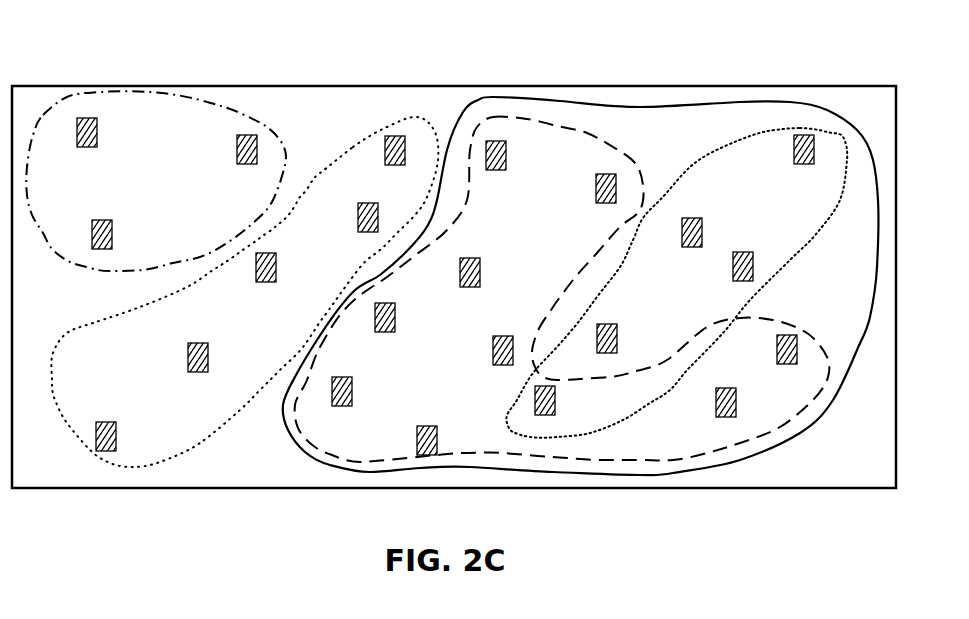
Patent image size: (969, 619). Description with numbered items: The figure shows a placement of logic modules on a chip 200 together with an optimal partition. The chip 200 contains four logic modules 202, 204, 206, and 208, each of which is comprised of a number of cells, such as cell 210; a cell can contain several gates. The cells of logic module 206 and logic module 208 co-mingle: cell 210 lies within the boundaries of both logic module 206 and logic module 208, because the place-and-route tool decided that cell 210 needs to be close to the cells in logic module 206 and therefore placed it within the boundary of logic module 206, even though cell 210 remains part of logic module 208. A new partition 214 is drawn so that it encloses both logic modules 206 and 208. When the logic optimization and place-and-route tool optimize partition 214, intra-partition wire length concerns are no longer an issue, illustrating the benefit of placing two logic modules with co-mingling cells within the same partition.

The chip 200 is at (13, 490).
The logic module 202 is at (200, 100).
The logic module 204 is at (347, 153).
The logic module 206 is at (533, 125).
The logic module 208 is at (780, 133).
The cell 210 is at (567, 400).
The partition 214 is at (467, 108).